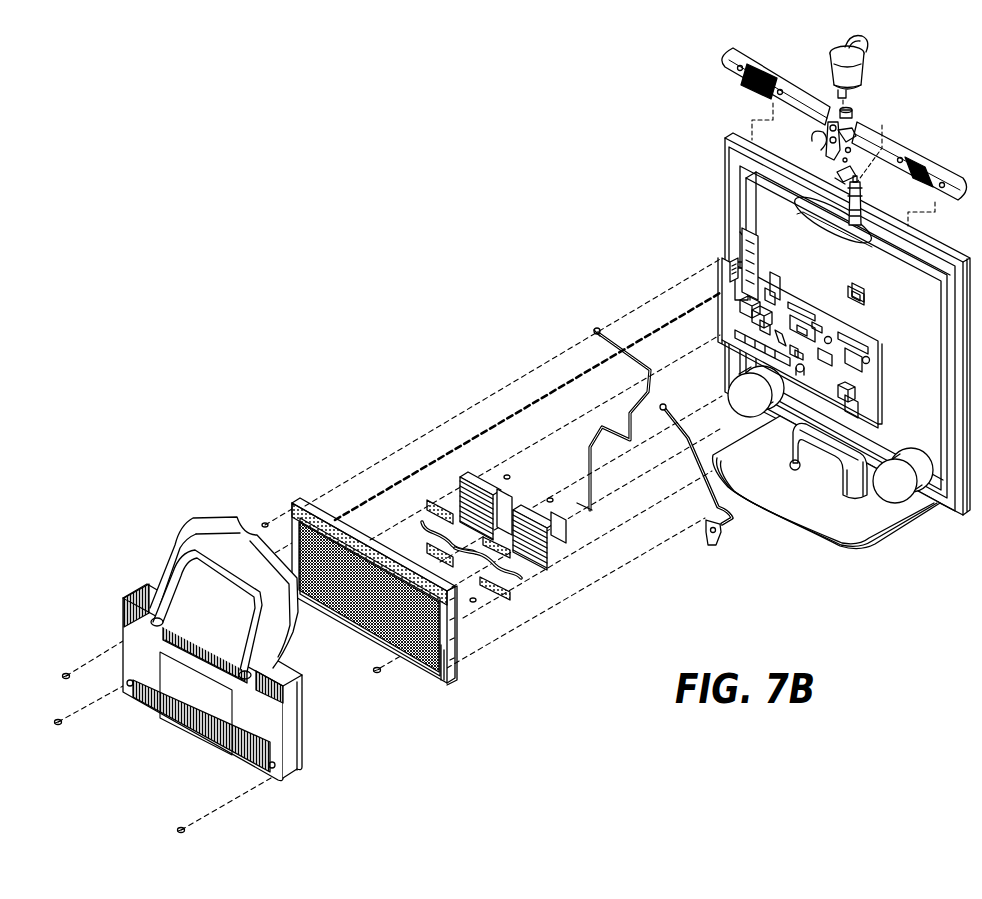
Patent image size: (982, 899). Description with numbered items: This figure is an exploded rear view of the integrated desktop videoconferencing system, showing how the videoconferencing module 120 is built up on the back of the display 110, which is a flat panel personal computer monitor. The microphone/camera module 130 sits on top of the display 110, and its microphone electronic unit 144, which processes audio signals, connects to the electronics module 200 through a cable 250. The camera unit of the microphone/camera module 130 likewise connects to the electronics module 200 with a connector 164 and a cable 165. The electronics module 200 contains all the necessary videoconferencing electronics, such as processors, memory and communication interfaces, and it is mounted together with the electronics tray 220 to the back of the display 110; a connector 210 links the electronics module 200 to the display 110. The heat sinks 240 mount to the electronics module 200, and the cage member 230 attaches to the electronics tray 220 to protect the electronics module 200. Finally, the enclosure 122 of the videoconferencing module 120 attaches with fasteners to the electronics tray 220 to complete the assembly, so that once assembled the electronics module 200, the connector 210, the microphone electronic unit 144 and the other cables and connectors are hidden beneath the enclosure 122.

The display 110 is at (726, 133).
The videoconferencing module 120 is at (478, 261).
The enclosure 122 is at (136, 597).
The microphone/camera module 130 is at (922, 82).
The electronic unit 144 is at (822, 147).
The connector 164 is at (859, 190).
The cable 165 is at (710, 548).
The electronics module 200 is at (747, 273).
The connector 210 is at (731, 263).
The electronics tray 220 is at (729, 258).
The cage member 230 is at (295, 505).
The heat sinks 240 is at (429, 459).
The cable 250 is at (607, 330).